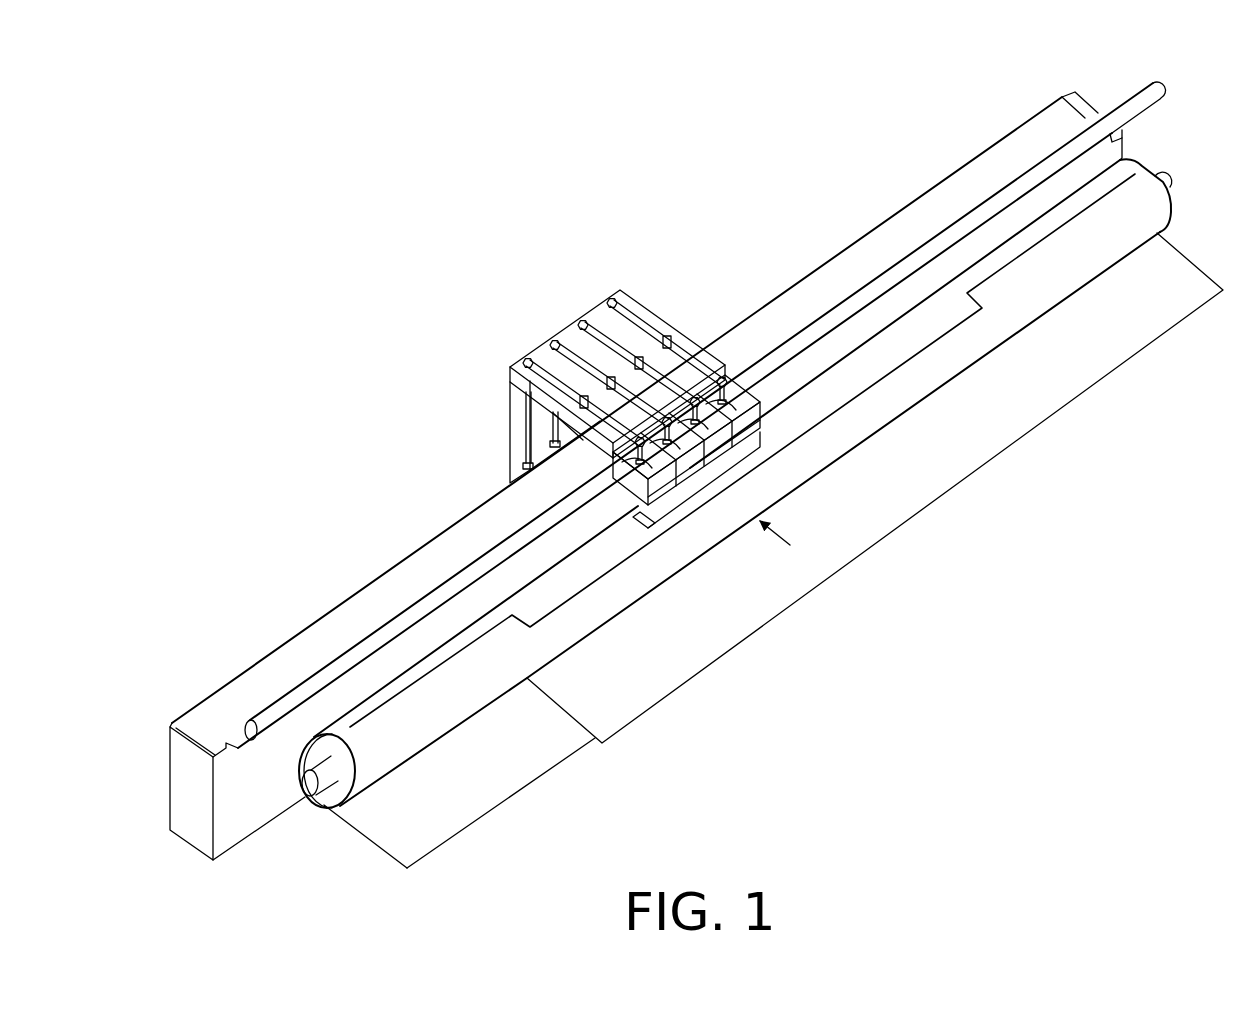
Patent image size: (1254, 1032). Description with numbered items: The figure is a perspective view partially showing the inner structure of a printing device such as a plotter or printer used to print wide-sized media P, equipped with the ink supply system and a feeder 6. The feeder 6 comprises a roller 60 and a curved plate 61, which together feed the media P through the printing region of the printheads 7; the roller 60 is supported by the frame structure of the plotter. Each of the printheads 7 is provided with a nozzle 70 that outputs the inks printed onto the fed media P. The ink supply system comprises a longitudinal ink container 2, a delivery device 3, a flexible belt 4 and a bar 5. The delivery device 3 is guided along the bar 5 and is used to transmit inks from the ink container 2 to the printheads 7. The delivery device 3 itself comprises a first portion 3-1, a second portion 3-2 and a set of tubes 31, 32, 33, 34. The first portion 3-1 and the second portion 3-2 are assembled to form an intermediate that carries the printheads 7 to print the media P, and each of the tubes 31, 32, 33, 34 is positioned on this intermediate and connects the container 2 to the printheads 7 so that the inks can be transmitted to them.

The ink container 2 is at (184, 787).
The delivery device 3 is at (499, 368).
The first portion 3-1 is at (589, 443).
The second portion 3-2 is at (508, 390).
The flexible belt 4 is at (167, 720).
The bar 5 is at (251, 716).
The feeder 6 is at (1174, 180).
The printheads 7 is at (747, 383).
The tube 31 is at (569, 380).
The tube 32 is at (601, 358).
The tube 33 is at (628, 336).
The tube 34 is at (656, 324).
The roller 60 is at (334, 795).
The curved plate 61 is at (452, 828).
The nozzle 70 is at (722, 470).
The media P is at (766, 618).